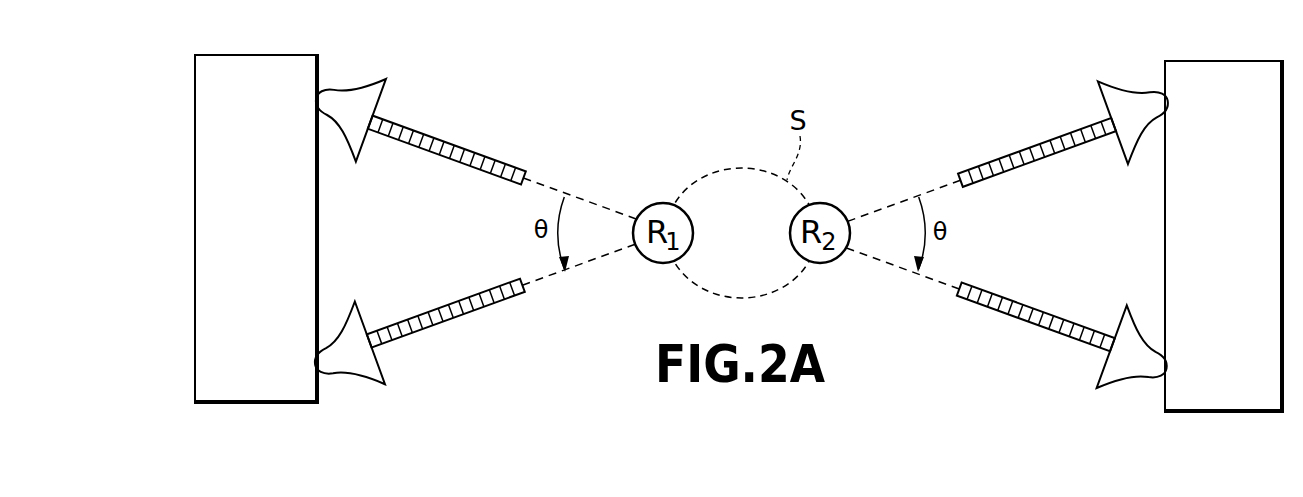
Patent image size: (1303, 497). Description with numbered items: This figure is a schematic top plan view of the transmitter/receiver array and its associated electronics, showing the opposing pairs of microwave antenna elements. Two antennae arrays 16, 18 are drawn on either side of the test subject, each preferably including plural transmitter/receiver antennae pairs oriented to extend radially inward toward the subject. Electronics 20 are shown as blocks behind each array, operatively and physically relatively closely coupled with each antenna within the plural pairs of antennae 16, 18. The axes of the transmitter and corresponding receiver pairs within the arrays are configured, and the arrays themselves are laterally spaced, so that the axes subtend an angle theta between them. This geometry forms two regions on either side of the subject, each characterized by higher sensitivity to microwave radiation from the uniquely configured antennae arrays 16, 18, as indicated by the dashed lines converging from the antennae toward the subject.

The antennae array 16 is at (452, 140).
The antennae array 18 is at (1032, 141).
The electronics 20 is at (279, 233).